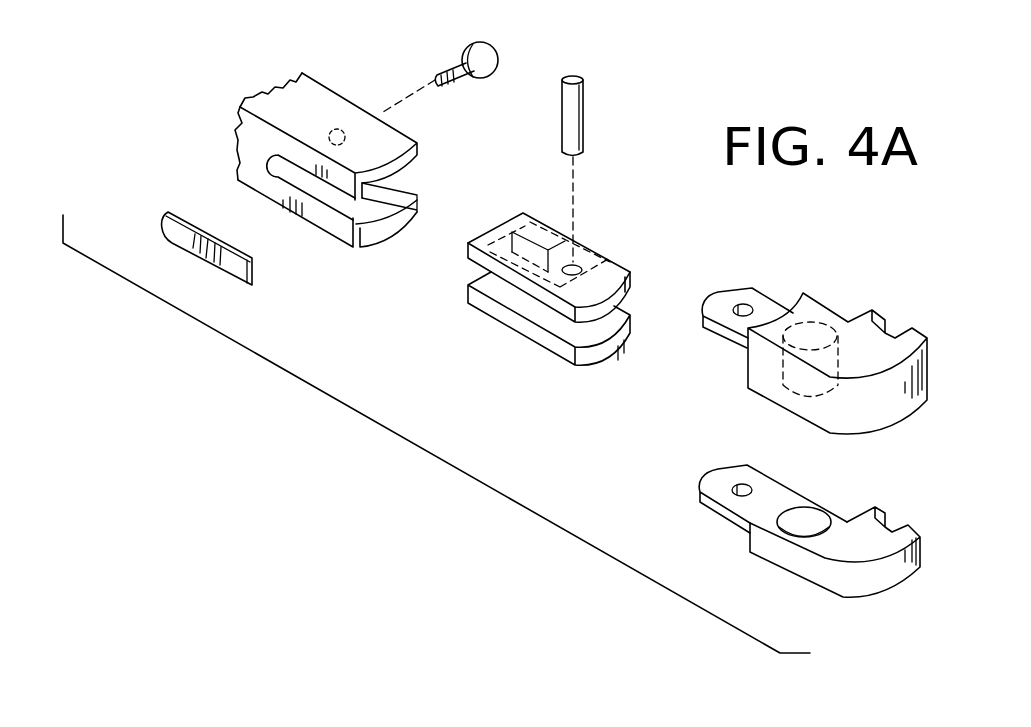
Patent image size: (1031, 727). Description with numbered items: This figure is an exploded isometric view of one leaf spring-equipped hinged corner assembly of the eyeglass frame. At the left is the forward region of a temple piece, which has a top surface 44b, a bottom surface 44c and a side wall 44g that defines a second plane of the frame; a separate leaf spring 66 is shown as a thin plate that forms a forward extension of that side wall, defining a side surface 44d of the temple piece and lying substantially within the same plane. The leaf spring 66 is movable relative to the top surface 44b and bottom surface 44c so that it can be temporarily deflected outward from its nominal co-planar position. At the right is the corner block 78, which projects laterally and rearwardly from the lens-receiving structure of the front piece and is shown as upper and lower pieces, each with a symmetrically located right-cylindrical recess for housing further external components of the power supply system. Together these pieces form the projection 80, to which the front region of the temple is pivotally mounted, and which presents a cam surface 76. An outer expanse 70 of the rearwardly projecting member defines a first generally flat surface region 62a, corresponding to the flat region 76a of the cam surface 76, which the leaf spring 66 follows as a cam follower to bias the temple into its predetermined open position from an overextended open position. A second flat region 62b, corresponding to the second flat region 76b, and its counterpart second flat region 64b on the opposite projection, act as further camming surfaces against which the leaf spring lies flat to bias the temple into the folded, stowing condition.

The top surface 44b is at (342, 117).
The bottom surface 44c is at (387, 242).
The side surface 44d is at (253, 155).
The side wall 44g is at (514, 190).
The leaf spring 66 is at (233, 278).
The cam surface 76 is at (688, 268).
The second flat region 62b is at (767, 287).
The second flat region 76b is at (833, 256).
The projection 80 is at (845, 289).
The corner block 78 is at (945, 315).
The first flat surface region 62a is at (743, 463).
The outer expanse 70 is at (743, 463).
The flat region 76a is at (743, 463).
The second flat region 64b is at (773, 481).